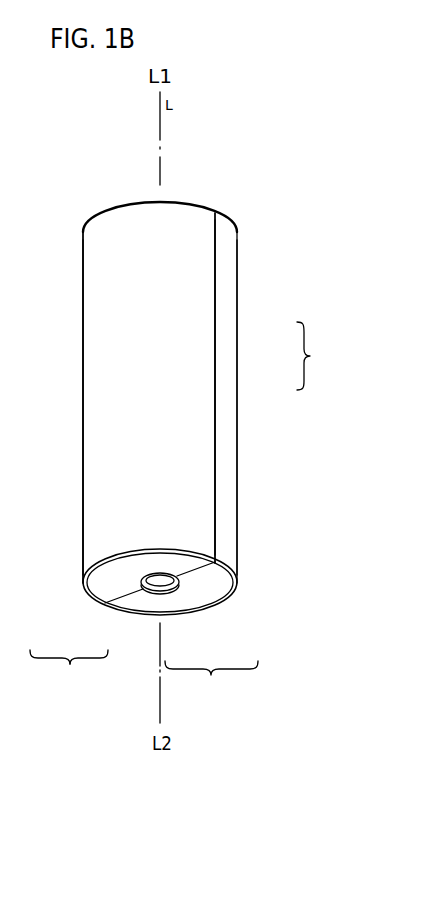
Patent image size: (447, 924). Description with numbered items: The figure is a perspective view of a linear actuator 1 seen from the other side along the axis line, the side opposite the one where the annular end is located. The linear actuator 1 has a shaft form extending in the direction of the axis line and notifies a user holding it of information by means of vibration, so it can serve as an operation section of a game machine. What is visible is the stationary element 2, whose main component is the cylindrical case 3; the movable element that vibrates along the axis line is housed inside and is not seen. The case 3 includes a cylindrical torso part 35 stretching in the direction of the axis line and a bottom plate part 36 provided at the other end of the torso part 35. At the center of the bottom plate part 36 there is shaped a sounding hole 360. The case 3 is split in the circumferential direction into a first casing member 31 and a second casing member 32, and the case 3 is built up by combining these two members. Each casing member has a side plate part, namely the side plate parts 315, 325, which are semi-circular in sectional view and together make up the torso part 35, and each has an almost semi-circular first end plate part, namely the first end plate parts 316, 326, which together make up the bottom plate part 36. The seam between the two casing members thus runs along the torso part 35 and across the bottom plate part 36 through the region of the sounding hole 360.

The linear actuator 1 is at (229, 197).
The stationary element 2 is at (89, 667).
The case 3 is at (54, 667).
The first casing member 31 is at (97, 533).
The second casing member 32 is at (220, 515).
The torso part 35 is at (315, 356).
The side plate part 315 is at (190, 348).
The side plate part 325 is at (228, 379).
The bottom plate part 36 is at (211, 679).
The first end plate part 316 is at (130, 589).
The first end plate part 326 is at (185, 600).
The sounding hole 360 is at (182, 596).